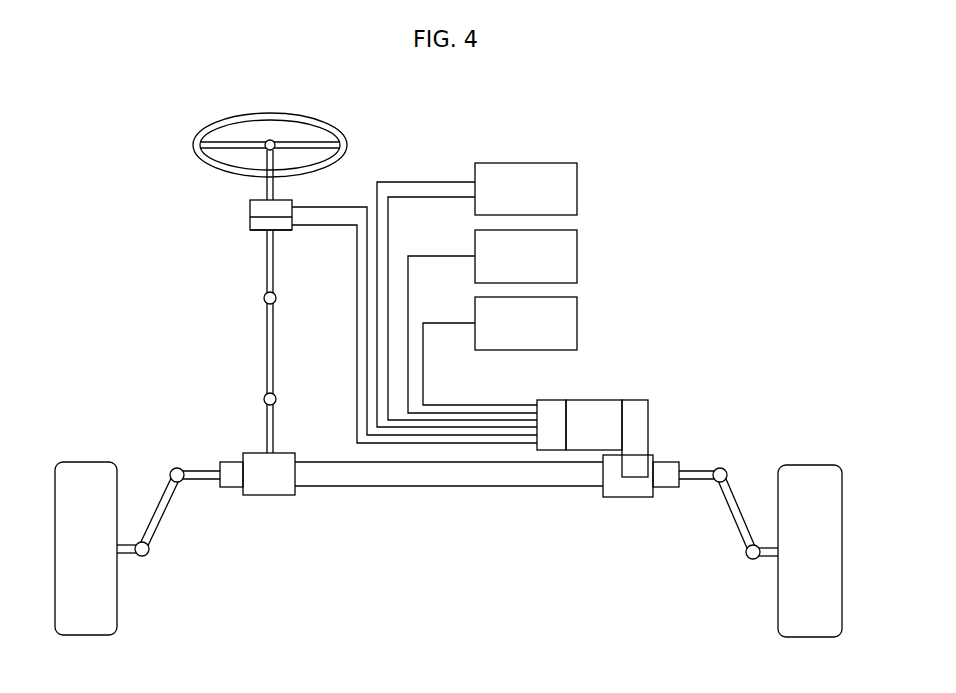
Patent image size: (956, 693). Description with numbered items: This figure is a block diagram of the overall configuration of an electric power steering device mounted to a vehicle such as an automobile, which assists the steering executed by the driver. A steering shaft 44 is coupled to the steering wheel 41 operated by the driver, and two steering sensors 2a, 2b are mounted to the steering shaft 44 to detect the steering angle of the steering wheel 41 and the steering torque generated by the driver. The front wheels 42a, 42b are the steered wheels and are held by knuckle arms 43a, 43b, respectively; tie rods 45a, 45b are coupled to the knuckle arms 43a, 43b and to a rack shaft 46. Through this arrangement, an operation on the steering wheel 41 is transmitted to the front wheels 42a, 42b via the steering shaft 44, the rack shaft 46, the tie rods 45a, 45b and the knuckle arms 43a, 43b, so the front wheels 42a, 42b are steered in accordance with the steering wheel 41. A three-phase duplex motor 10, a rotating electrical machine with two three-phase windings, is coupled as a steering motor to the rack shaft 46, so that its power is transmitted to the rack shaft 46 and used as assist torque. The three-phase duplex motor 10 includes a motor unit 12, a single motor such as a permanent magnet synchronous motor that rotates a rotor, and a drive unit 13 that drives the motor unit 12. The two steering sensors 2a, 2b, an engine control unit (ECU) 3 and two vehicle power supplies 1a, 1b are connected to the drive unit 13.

The steering wheel 41 is at (347, 132).
The steering sensor 2a is at (248, 210).
The steering sensor 2b is at (262, 233).
The steering shaft 44 is at (263, 345).
The engine control unit (ECU) 3 is at (577, 180).
The vehicle power supply 1a is at (577, 258).
The vehicle power supply 1b is at (577, 323).
The drive unit 13 is at (550, 400).
The motor unit 12 is at (587, 400).
The three-phase duplex motor 10 is at (643, 400).
The rack shaft 46 is at (433, 486).
The tie rod 45a is at (192, 437).
The tie rod 45b is at (703, 467).
The knuckle arm 43a is at (173, 508).
The knuckle arm 43b is at (732, 527).
The front wheel 42a is at (118, 612).
The front wheel 42b is at (778, 613).